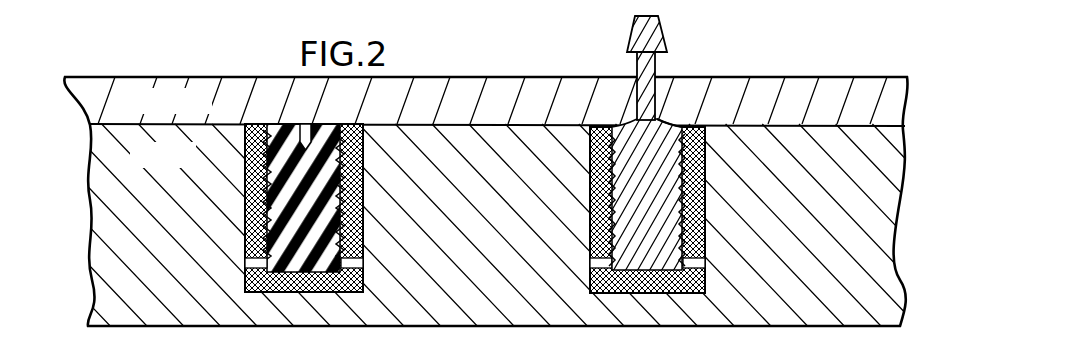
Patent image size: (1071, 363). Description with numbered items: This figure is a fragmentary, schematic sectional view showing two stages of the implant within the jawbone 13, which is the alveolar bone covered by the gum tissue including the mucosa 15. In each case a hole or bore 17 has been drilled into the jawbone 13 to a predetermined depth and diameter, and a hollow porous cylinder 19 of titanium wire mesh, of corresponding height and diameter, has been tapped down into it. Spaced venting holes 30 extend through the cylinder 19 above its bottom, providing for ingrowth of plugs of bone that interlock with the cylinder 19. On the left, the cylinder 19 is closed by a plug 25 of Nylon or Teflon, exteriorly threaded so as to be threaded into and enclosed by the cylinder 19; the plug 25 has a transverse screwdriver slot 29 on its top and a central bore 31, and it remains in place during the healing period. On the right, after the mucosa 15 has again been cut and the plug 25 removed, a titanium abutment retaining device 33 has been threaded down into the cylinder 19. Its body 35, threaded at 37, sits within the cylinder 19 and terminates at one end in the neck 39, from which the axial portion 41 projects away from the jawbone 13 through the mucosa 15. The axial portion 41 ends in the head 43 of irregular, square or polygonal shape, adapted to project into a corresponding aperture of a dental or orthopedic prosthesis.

The jawbone 13 is at (490, 313).
The mucosa 15 is at (508, 80).
The hole or bore 17 is at (247, 208).
The hollow porous cylinder 19 is at (362, 204).
The plug 25 is at (297, 124).
The screwdriver slot 29 is at (306, 126).
The venting holes 30 is at (249, 262).
The central bore 31 is at (310, 150).
The abutment retaining device 33 is at (645, 60).
The body 35 is at (624, 216).
The threads 37 is at (686, 171).
The neck 39 is at (668, 128).
The axial portion 41 is at (656, 66).
The head 43 is at (658, 20).